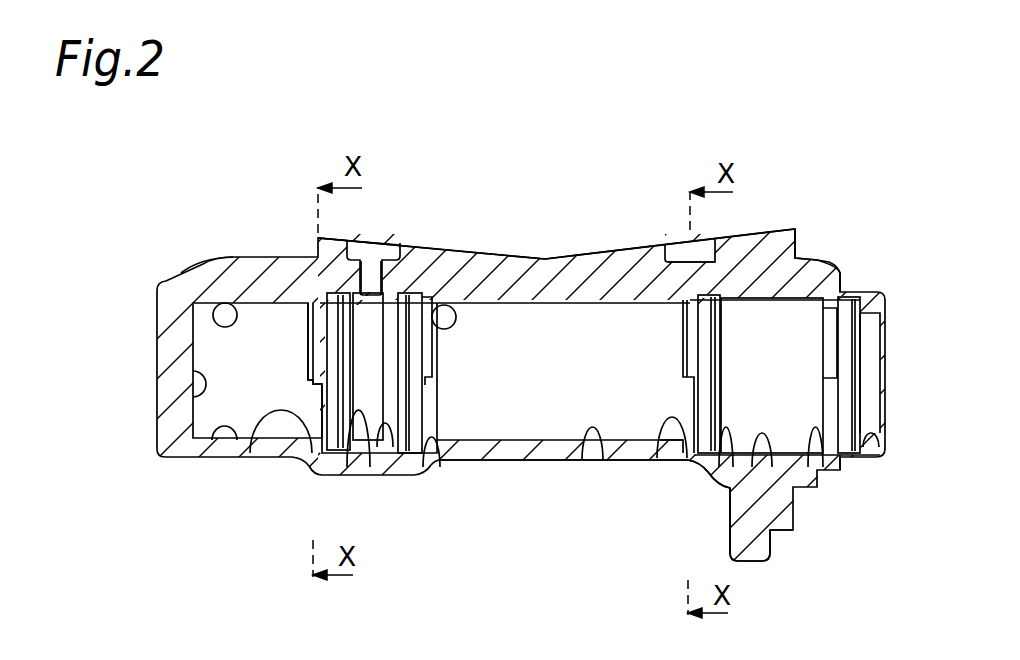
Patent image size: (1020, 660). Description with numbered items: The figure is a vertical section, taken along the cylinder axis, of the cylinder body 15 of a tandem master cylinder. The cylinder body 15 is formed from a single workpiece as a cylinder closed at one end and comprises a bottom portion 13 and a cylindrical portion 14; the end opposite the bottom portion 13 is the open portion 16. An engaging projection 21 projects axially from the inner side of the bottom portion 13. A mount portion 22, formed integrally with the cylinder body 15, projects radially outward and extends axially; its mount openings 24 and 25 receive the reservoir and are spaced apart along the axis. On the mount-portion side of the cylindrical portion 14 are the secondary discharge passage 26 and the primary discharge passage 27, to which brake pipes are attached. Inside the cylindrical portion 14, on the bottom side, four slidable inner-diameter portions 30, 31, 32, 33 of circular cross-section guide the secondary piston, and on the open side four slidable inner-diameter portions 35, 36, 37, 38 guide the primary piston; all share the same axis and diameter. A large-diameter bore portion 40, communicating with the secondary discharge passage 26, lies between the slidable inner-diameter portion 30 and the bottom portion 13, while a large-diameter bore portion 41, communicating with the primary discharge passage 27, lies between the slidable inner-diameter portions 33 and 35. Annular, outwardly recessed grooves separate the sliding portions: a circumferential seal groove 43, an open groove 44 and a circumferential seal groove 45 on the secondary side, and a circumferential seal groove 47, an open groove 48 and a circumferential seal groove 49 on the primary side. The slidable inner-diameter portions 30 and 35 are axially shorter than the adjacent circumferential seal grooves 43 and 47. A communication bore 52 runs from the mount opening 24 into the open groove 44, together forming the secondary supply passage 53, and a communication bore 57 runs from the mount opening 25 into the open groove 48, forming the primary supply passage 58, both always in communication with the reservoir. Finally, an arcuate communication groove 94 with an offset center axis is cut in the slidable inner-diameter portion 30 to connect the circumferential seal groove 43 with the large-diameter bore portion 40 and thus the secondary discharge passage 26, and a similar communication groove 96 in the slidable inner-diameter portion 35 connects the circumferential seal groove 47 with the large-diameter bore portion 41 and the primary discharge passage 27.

The bottom portion 13 is at (177, 338).
The cylindrical portion 14 is at (545, 452).
The cylinder body 15 is at (157, 283).
The open portion 16 is at (868, 341).
The engaging projection 21 is at (190, 404).
The mount portion 22 is at (534, 260).
The mount opening 24 is at (386, 242).
The mount opening 25 is at (668, 260).
The secondary discharge passage 26 is at (222, 302).
The primary discharge passage 27 is at (450, 305).
The slidable inner-diameter portion 30 is at (277, 422).
The slidable inner-diameter portion 31 is at (372, 462).
The slidable inner-diameter portion 32 is at (384, 443).
The slidable inner-diameter portion 33 is at (450, 430).
The slidable inner-diameter portion 35 is at (651, 458).
The slidable inner-diameter portion 36 is at (722, 453).
The slidable inner-diameter portion 37 is at (817, 466).
The slidable inner-diameter portion 38 is at (873, 433).
The large-diameter bore portion 40 is at (231, 428).
The large-diameter bore portion 41 is at (589, 461).
The circumferential seal groove 43 is at (309, 458).
The open groove 44 is at (348, 454).
The circumferential seal groove 45 is at (428, 440).
The circumferential seal groove 47 is at (677, 455).
The open groove 48 is at (776, 527).
The circumferential seal groove 49 is at (866, 459).
The communication bore 52 is at (362, 283).
The secondary supply passage 53 is at (369, 241).
The communication bore 57 is at (737, 257).
The primary supply passage 58 is at (687, 261).
The communication groove 94 is at (308, 348).
The communication groove 96 is at (678, 338).